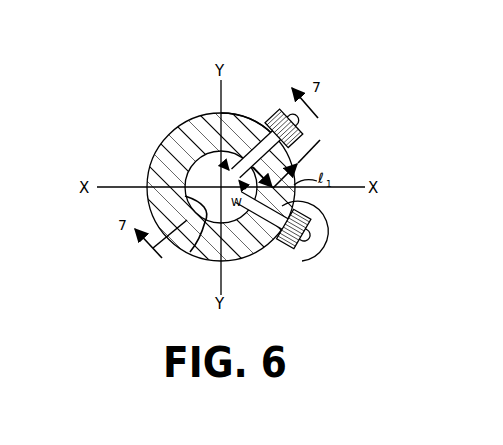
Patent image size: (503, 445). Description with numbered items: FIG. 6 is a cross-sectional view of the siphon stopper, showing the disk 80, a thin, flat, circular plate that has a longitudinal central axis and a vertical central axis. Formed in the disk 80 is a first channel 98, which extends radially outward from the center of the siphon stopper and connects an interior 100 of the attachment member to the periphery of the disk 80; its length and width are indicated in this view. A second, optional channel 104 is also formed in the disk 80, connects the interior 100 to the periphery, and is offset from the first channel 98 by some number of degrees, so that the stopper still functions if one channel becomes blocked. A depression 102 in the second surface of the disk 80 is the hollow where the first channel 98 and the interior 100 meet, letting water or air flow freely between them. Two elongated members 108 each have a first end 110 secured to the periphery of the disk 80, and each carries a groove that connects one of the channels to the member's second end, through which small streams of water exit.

The disk 80 is at (185, 119).
The first channel 98 is at (242, 112).
The interior of the attachment member 100 is at (190, 252).
The depression 102 is at (219, 187).
The second channel 104 is at (322, 211).
The elongated member 108 is at (303, 130).
The first end 110 is at (272, 114).